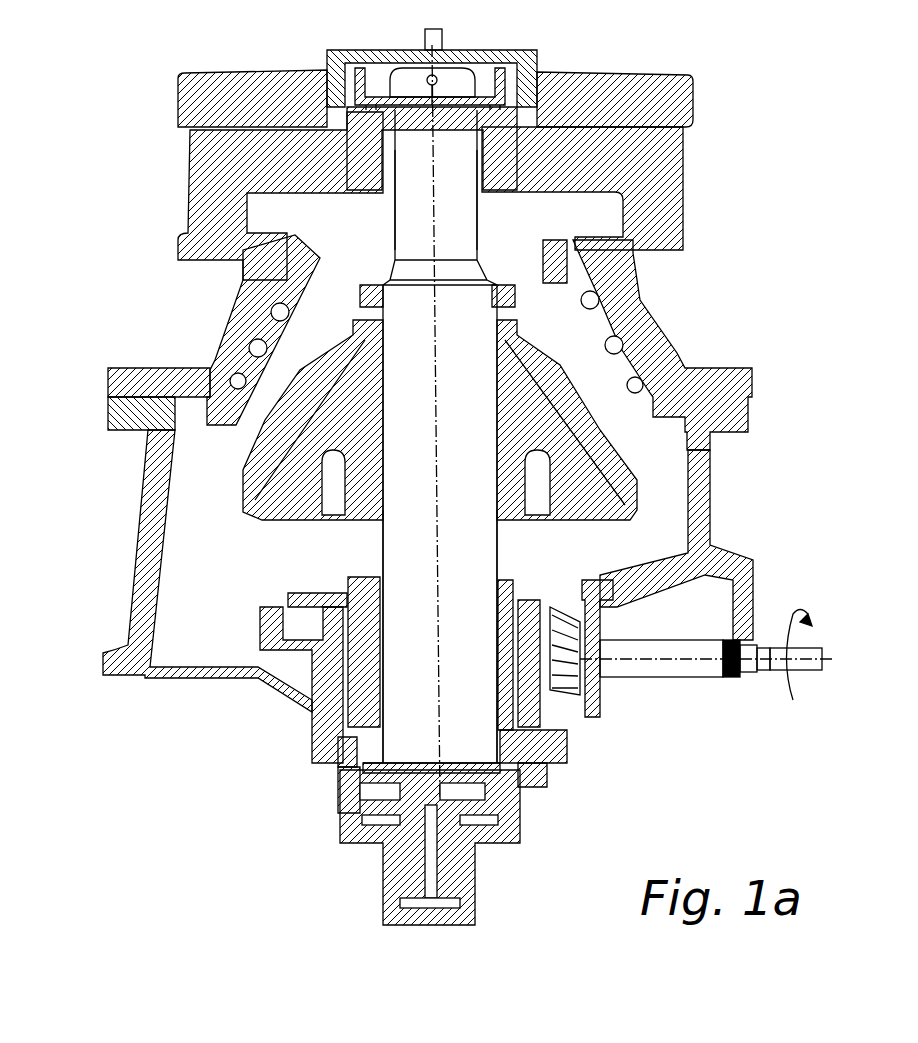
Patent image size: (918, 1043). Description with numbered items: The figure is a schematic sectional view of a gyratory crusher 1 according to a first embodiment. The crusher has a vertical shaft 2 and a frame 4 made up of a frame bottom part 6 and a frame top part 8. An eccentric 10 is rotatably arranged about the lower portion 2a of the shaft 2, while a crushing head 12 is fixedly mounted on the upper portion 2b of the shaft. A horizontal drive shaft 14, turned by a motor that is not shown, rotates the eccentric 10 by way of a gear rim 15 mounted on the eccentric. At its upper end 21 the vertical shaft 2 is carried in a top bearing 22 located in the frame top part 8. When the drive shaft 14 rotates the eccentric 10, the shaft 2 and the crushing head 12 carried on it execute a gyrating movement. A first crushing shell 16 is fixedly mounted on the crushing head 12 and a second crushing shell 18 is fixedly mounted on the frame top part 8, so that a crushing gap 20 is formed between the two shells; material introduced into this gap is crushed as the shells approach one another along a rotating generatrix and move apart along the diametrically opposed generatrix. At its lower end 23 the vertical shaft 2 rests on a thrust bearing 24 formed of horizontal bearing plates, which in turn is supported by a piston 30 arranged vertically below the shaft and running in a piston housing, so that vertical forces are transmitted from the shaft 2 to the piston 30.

The gyratory crusher 1 is at (178, 47).
The vertical shaft 2 is at (473, 385).
The lower portion of the shaft 2a is at (277, 605).
The upper portion of the shaft 2b is at (413, 413).
The frame 4 is at (105, 400).
The frame bottom part 6 is at (133, 587).
The frame top part 8 is at (133, 395).
The eccentric 10 is at (347, 687).
The crushing head 12 is at (255, 490).
The drive shaft 14 is at (663, 670).
The gear rim 15 is at (740, 607).
The first crushing shell 16 is at (265, 437).
The second crushing shell 18 is at (243, 428).
The crushing gap 20 is at (282, 328).
The upper end of the shaft 21 is at (422, 167).
The top bearing 22 is at (537, 82).
The lower end of the shaft 23 is at (342, 775).
The thrust bearing 24 is at (360, 795).
The piston 30 is at (457, 873).